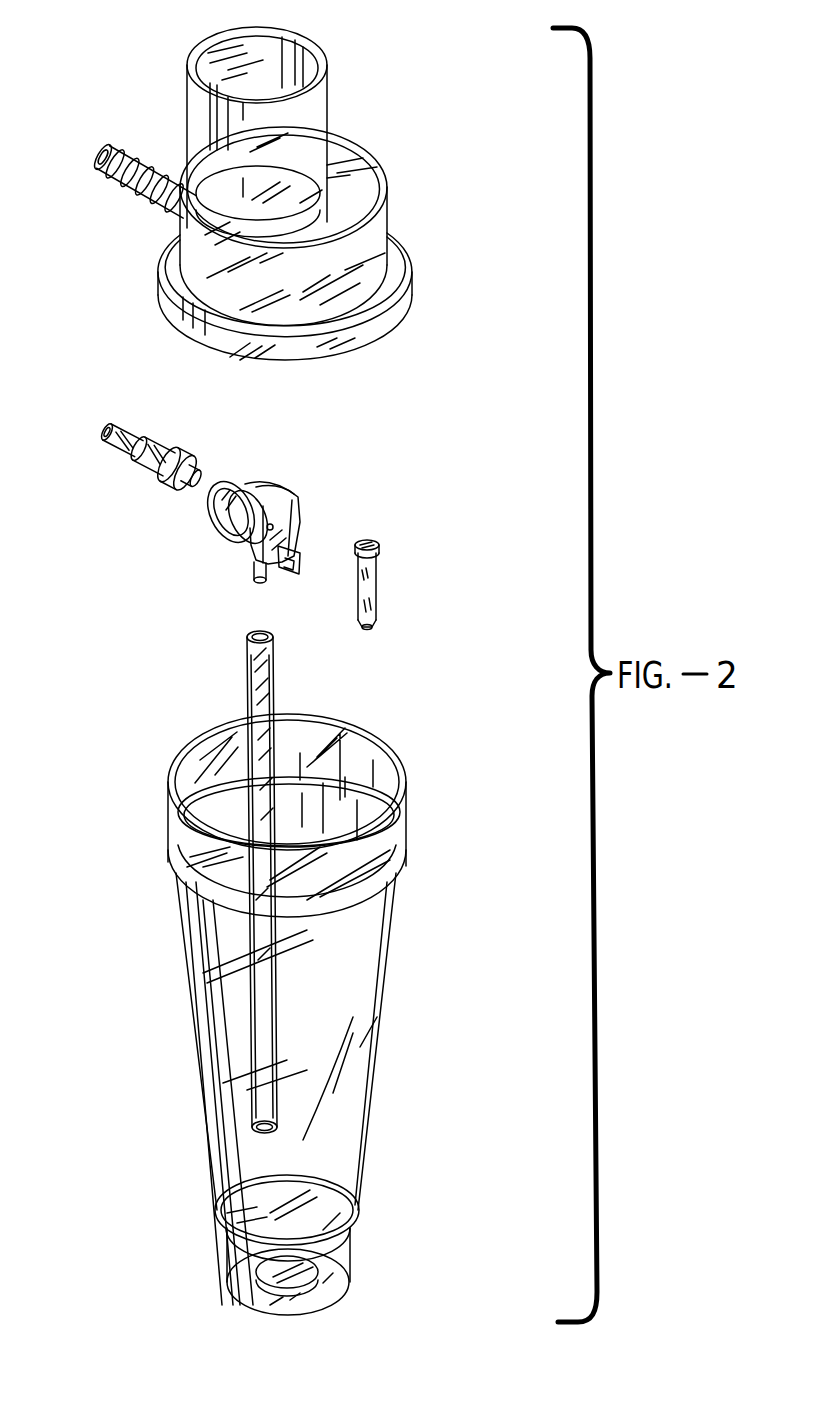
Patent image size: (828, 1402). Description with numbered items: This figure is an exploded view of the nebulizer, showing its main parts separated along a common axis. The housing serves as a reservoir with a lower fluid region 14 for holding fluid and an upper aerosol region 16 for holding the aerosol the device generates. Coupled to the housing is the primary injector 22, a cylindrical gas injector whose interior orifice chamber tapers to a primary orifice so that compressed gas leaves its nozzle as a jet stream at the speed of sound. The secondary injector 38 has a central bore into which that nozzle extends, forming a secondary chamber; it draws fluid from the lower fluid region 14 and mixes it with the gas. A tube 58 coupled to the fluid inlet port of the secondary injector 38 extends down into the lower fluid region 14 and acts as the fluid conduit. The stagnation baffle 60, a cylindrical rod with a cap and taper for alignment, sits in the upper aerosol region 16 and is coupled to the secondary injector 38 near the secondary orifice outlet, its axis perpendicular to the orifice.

The lower fluid region 14 is at (242, 1058).
The upper aerosol region 16 is at (363, 260).
The primary injector 22 is at (155, 435).
The secondary injector 38 is at (277, 487).
The tube 58 is at (247, 645).
The stagnation baffle 60 is at (375, 587).